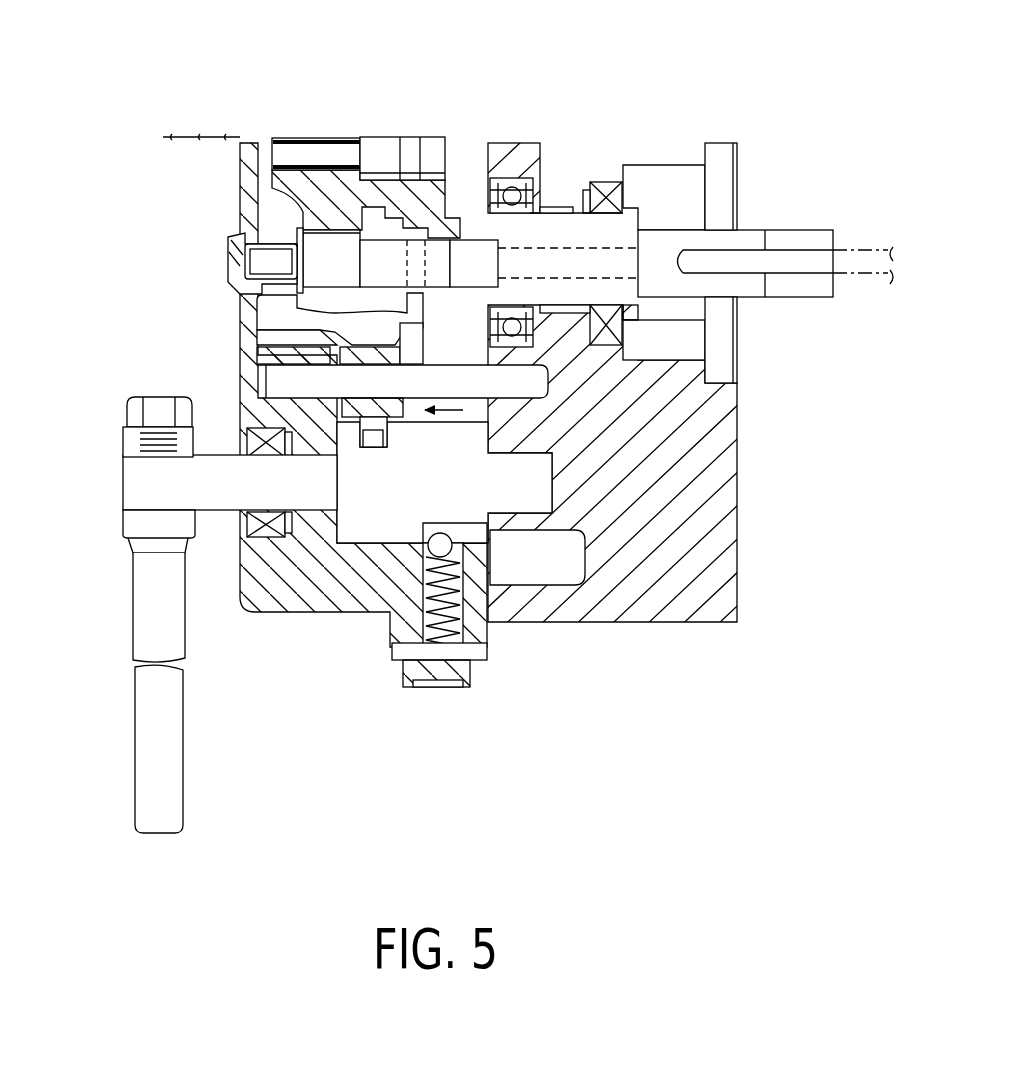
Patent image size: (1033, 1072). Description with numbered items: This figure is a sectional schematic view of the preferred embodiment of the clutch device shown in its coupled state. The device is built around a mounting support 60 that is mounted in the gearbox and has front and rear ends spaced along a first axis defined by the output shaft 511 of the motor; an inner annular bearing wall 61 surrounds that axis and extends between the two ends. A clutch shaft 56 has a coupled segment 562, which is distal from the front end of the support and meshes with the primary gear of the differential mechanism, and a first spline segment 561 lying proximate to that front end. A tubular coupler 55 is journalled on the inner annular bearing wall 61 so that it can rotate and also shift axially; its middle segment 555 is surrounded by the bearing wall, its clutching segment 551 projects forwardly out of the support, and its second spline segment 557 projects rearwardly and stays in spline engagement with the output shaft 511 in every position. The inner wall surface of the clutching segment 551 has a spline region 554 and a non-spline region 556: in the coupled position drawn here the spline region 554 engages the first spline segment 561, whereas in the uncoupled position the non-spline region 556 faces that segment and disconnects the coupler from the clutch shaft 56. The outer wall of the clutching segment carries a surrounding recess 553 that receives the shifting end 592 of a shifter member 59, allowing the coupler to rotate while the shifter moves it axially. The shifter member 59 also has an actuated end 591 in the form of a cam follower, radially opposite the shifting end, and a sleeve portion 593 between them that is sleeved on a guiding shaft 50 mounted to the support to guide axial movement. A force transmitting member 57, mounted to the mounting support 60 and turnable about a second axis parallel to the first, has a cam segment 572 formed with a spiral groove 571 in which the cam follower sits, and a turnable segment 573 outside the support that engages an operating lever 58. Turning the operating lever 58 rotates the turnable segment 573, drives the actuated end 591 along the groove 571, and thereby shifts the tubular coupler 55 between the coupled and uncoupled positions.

The guiding shaft 50 is at (550, 378).
The output shaft 511 is at (781, 250).
The tubular coupler 55 is at (640, 325).
The clutching segment 551 is at (428, 240).
The surrounding recess 553 is at (437, 237).
The spline region 554 is at (463, 238).
The middle segment 555 is at (623, 165).
The non-spline region 556 is at (397, 232).
The second spline segment 557 is at (667, 237).
The clutch shaft 56 is at (262, 242).
The first spline segment 561 is at (571, 222).
The coupled segment 562 is at (263, 265).
The force transmitting member 57 is at (366, 543).
The groove 571 is at (260, 378).
The cam segment 572 is at (463, 510).
The turnable segment 573 is at (132, 487).
The operating lever 58 is at (170, 762).
The shifter member 59 is at (352, 428).
The actuated end 591 is at (390, 426).
The shifting end 592 is at (259, 307).
The sleeve portion 593 is at (260, 333).
The mounting support 60 is at (677, 146).
The inner annular bearing wall 61 is at (563, 315).